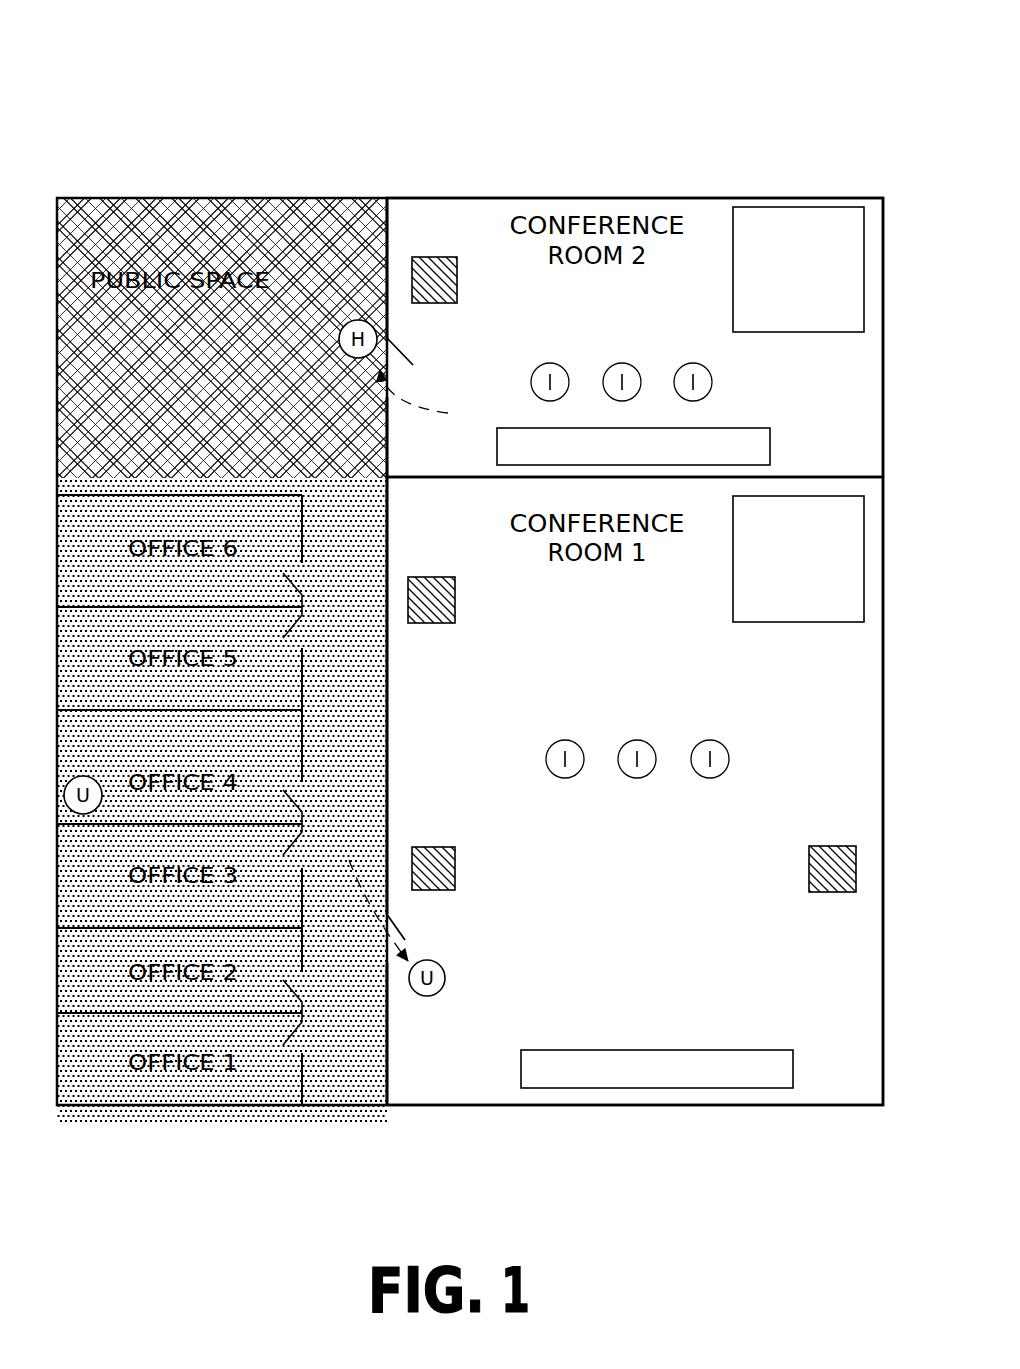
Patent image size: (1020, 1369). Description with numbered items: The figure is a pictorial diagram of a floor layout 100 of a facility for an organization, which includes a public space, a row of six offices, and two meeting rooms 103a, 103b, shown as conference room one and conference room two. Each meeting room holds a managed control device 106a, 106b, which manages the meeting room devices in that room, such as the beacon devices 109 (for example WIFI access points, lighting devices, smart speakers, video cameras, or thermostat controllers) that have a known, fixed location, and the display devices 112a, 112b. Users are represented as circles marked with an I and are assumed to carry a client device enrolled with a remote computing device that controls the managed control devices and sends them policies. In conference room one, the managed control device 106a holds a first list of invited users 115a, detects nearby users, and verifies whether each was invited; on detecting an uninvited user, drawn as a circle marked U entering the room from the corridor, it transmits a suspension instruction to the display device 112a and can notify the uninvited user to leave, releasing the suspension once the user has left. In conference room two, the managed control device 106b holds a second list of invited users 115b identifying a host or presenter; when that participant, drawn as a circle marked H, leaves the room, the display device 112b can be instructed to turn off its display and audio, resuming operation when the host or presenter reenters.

The floor layout 100 is at (390, 105).
The meeting room 103a is at (857, 1084).
The meeting room 103b is at (716, 194).
The managed control device 106a is at (773, 614).
The managed control device 106b is at (773, 325).
The beacon device 109 is at (425, 303).
The display device 112a is at (718, 1081).
The display device 112b is at (694, 459).
The first list of invited users 115a is at (551, 722).
The second list of invited users 115b is at (538, 355).